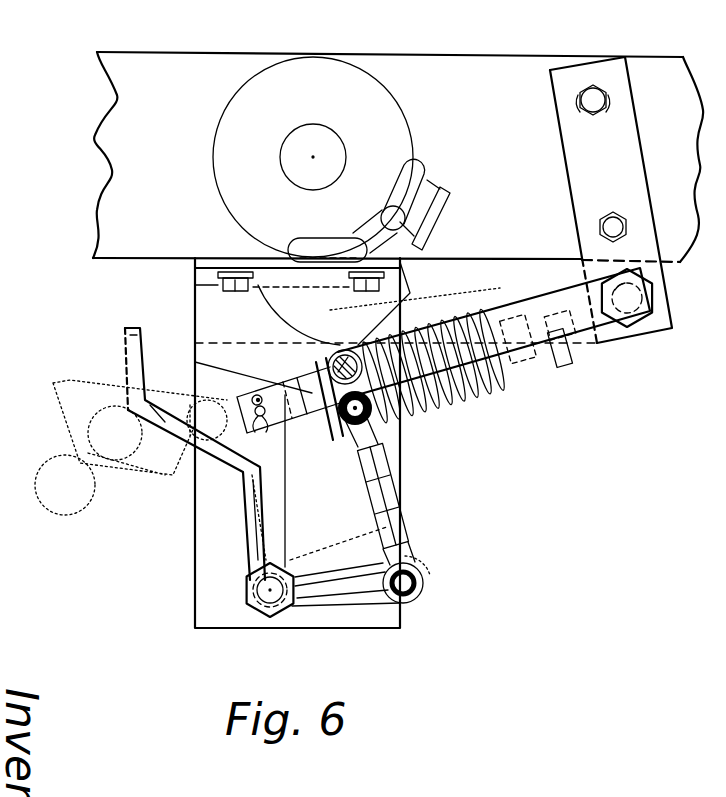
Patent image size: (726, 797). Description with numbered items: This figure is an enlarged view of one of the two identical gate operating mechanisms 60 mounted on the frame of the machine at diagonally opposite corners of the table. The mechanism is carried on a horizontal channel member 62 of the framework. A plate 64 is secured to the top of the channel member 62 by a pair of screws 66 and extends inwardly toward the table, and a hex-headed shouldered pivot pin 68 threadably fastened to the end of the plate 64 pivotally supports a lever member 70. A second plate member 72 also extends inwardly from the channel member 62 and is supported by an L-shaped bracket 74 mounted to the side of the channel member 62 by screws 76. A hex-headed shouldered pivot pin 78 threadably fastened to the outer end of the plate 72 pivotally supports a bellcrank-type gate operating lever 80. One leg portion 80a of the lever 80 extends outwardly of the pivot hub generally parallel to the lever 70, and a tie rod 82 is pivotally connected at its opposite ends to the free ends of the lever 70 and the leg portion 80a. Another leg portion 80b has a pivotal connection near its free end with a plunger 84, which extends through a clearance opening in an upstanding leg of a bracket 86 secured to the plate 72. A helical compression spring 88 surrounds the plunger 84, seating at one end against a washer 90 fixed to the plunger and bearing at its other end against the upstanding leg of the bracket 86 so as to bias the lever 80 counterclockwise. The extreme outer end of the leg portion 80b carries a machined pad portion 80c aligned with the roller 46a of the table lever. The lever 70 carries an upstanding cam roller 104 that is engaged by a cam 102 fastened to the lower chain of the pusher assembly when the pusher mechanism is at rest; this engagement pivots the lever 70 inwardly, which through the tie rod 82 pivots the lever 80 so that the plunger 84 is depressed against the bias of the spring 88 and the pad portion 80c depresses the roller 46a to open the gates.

The gate operating mechanism 60 is at (592, 438).
The horizontal channel member 62 is at (437, 65).
The plate 64 is at (575, 185).
The screws 66 is at (600, 112).
The hex-headed shouldered pivot pin 68 is at (648, 292).
The lever member 70 is at (528, 306).
The second plate member 72 is at (373, 626).
The L-shaped bracket 74 is at (212, 262).
The screws 76 is at (217, 283).
The hex-headed shouldered pivot pin 78 is at (268, 616).
The bellcrank-type gate operating lever 80 is at (262, 537).
The leg portion 80a is at (330, 600).
The leg portion 80b is at (235, 462).
The machined pad portion 80c is at (130, 352).
The tie rod 82 is at (392, 472).
The plunger 84 is at (540, 372).
The bracket 86 is at (498, 384).
The helical compression spring 88 is at (440, 410).
The washer 90 is at (340, 440).
The cam 102 is at (275, 312).
The cam roller 104 is at (330, 365).
The roller 46a is at (95, 431).